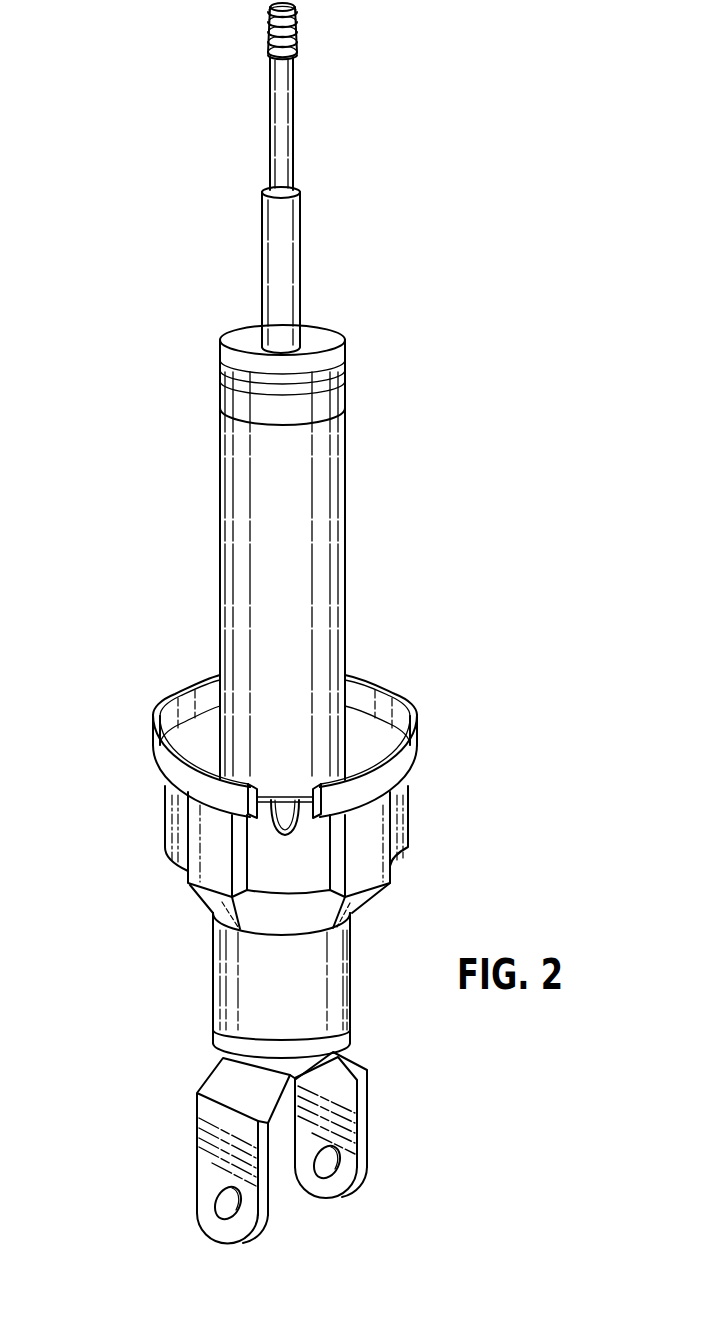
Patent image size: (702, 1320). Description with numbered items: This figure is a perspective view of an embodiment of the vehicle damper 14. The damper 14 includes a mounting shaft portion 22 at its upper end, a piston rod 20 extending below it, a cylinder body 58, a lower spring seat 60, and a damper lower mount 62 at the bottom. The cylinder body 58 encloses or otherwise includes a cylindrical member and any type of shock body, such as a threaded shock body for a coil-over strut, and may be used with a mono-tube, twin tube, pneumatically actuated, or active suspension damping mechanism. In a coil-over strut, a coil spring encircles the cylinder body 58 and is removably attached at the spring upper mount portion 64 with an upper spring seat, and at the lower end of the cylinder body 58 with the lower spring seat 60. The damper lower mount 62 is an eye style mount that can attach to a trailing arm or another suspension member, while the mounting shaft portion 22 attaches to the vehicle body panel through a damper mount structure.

The damper 14 is at (84, 221).
The piston rod 20 is at (300, 225).
The mounting shaft portion 22 is at (297, 64).
The cylinder body 58 is at (345, 523).
The lower spring seat 60 is at (152, 762).
The damper lower mount 62 is at (204, 1176).
The spring upper mount portion 64 is at (345, 388).